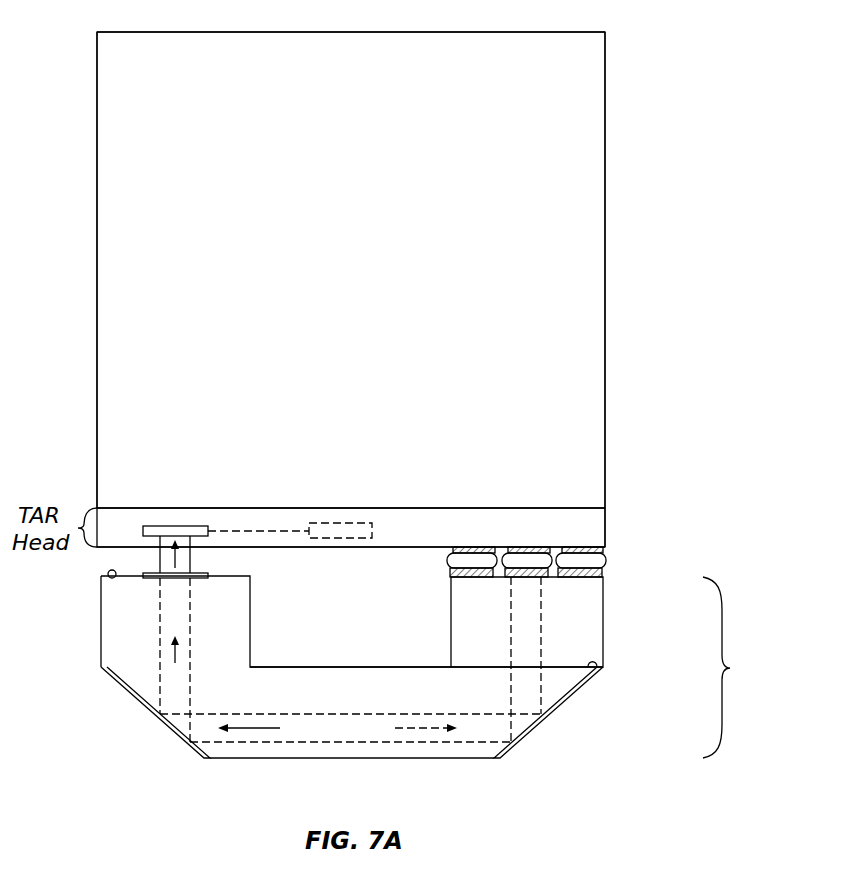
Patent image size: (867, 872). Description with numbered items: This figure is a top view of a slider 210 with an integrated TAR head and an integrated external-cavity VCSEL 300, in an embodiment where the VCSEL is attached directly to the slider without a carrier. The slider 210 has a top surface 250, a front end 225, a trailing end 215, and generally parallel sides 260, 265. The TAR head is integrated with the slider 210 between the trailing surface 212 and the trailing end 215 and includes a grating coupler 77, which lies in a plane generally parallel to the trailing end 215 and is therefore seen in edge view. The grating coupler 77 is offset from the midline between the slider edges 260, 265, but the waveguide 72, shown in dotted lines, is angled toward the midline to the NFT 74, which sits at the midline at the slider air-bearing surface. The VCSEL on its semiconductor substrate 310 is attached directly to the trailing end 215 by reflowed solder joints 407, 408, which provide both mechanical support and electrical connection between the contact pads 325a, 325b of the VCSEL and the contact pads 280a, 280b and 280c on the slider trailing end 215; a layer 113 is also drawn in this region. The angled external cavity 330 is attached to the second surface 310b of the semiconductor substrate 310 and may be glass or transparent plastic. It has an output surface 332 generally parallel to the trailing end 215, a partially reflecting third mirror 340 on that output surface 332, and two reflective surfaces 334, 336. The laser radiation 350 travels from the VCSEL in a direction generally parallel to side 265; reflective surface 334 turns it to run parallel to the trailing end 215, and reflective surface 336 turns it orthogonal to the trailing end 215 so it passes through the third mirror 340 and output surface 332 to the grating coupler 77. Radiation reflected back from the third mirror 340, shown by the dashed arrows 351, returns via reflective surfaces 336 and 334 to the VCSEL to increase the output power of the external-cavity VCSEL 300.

The slider 210 is at (372, 281).
The front end 225 is at (123, 32).
The top surface 250 is at (115, 130).
The side 260 is at (97, 314).
The side 265 is at (605, 200).
The trailing surface 212 is at (228, 508).
The trailing end 215 is at (333, 549).
The passivation layer 113 is at (593, 527).
The grating coupler 77 is at (153, 525).
The waveguide 72 is at (275, 528).
The NFT 74 is at (360, 523).
The partially reflecting third mirror 340 is at (153, 578).
The contact pad 280a is at (467, 548).
The contact pad 280b is at (517, 556).
The contact pad 280c is at (607, 553).
The reflowed solder joint 407 is at (527, 548).
The reflowed solder joint 408 is at (602, 563).
The semiconductor substrate 310 is at (588, 626).
The second surface 310b is at (603, 667).
The contact pad 325a is at (538, 585).
The contact pad 325b is at (605, 578).
The output surface 332 is at (105, 588).
The external cavity 330 is at (215, 756).
The reflective surface 336 is at (168, 733).
The reflective surface 334 is at (532, 731).
The laser radiation beam 350 is at (235, 728).
The dashed arrows 351 is at (432, 728).
The external-cavity VCSEL 300 is at (746, 667).